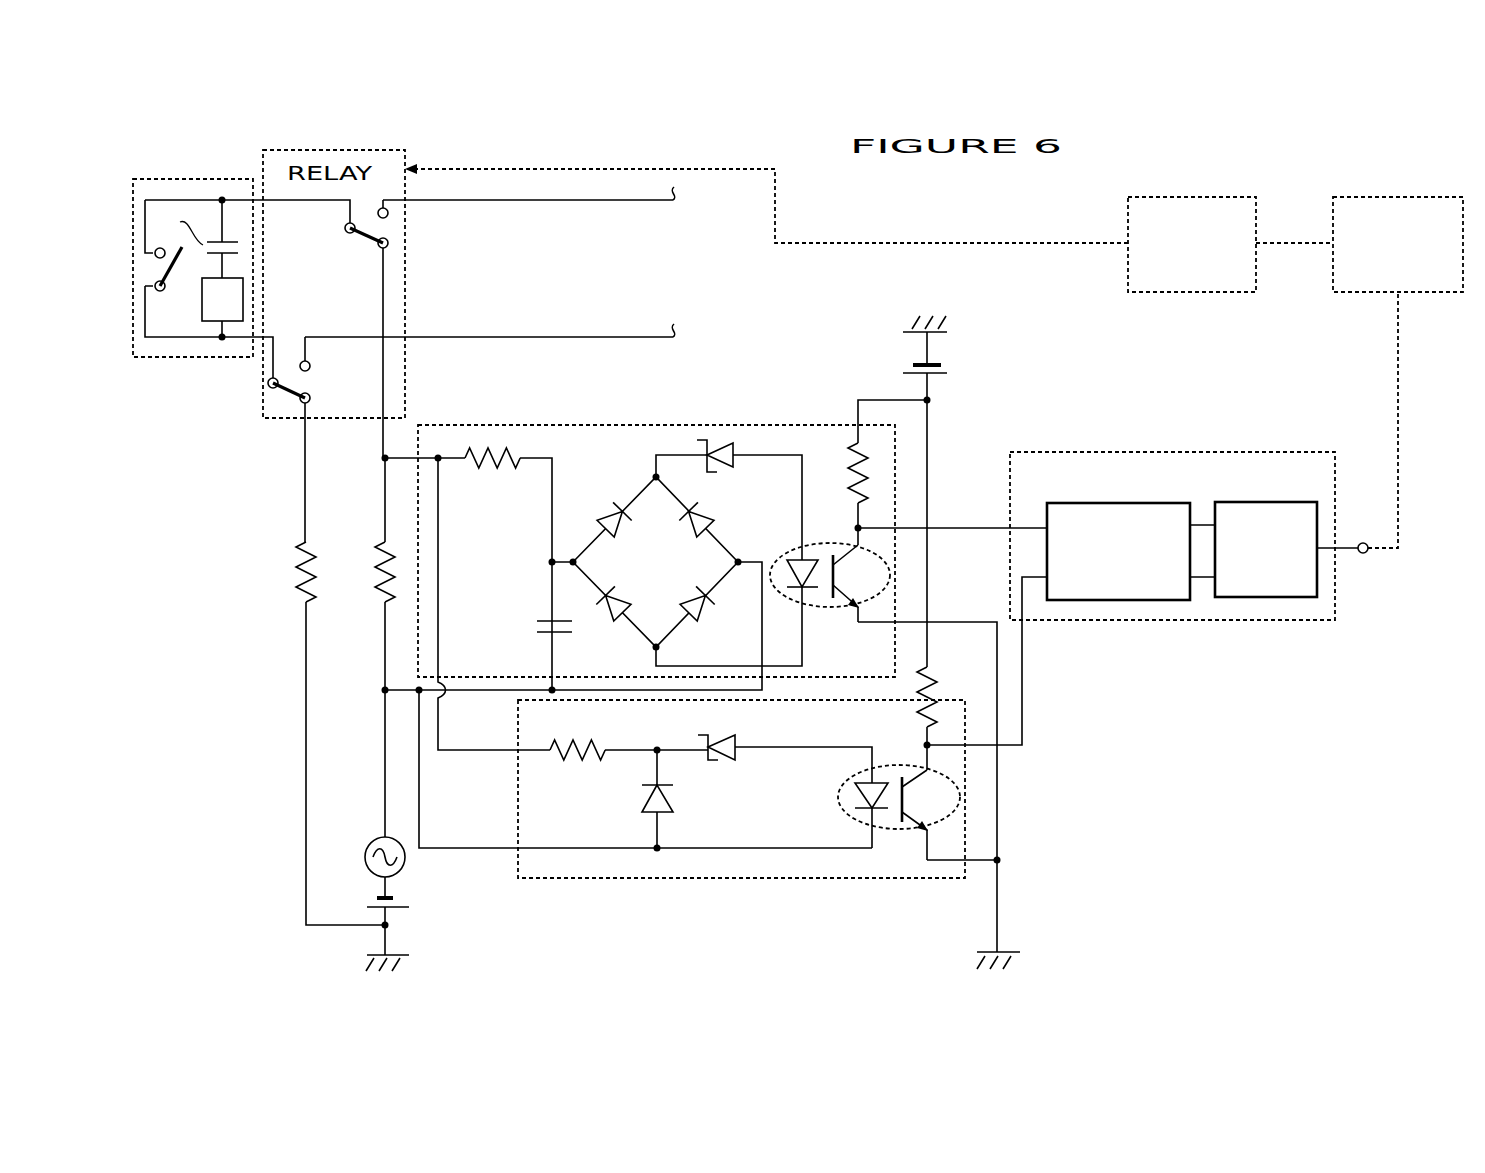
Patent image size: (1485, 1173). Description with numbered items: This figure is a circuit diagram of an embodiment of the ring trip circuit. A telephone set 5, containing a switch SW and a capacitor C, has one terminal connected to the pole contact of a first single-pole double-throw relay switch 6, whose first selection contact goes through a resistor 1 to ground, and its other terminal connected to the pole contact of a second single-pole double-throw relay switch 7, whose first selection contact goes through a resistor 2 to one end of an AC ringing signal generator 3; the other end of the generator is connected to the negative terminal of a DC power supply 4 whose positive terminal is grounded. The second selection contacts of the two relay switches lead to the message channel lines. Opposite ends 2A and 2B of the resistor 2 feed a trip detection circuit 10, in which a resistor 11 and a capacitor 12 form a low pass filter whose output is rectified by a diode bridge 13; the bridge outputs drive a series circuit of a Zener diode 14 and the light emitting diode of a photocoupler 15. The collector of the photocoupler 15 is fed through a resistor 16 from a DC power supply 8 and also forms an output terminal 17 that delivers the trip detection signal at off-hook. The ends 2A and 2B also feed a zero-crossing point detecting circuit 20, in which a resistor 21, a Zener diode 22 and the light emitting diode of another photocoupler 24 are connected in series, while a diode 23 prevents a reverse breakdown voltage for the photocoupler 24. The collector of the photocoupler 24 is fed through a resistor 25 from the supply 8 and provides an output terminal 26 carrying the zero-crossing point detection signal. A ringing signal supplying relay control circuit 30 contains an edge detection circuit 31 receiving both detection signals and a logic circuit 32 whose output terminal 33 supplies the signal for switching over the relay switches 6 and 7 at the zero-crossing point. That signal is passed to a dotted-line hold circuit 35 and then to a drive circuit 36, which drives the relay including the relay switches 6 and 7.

The resistor 1 is at (296, 574).
The resistor for detecting the AC ringing signal 2 is at (378, 574).
The first end of the resistor 2A is at (380, 458).
The second end of the resistor 2B is at (380, 690).
The AC ringing signal generator 3 is at (407, 862).
The DC power supply 4 is at (368, 907).
The telephone set 5 is at (175, 178).
The first single-pole double-throw relay switch 6 is at (306, 381).
The second single-pole double-throw relay switch 7 is at (398, 230).
The DC power supply 8 is at (950, 370).
The trip detection circuit 10 is at (435, 426).
The resistor 11 is at (494, 470).
The capacitor 12 is at (537, 626).
The diode bridge 13 is at (620, 490).
The Zener diode 14 is at (716, 438).
The photocoupler 15 is at (872, 547).
The resistor 16 is at (851, 465).
The output terminal 17 is at (855, 527).
The zero-crossing point detecting circuit 20 is at (688, 882).
The resistor 21 is at (580, 762).
The Zener diode 22 is at (740, 757).
The diode 23 is at (672, 800).
The photocoupler 24 is at (960, 779).
The resistor 25 is at (937, 670).
The output terminal 26 is at (925, 745).
The ringing signal supplying relay control circuit 30 is at (1085, 620).
The edge detection circuit 31 is at (1150, 503).
The logic circuit 32 is at (1275, 502).
The output terminal 33 is at (1363, 542).
The hold circuit 35 is at (1433, 197).
The drive circuit 36 is at (1228, 197).